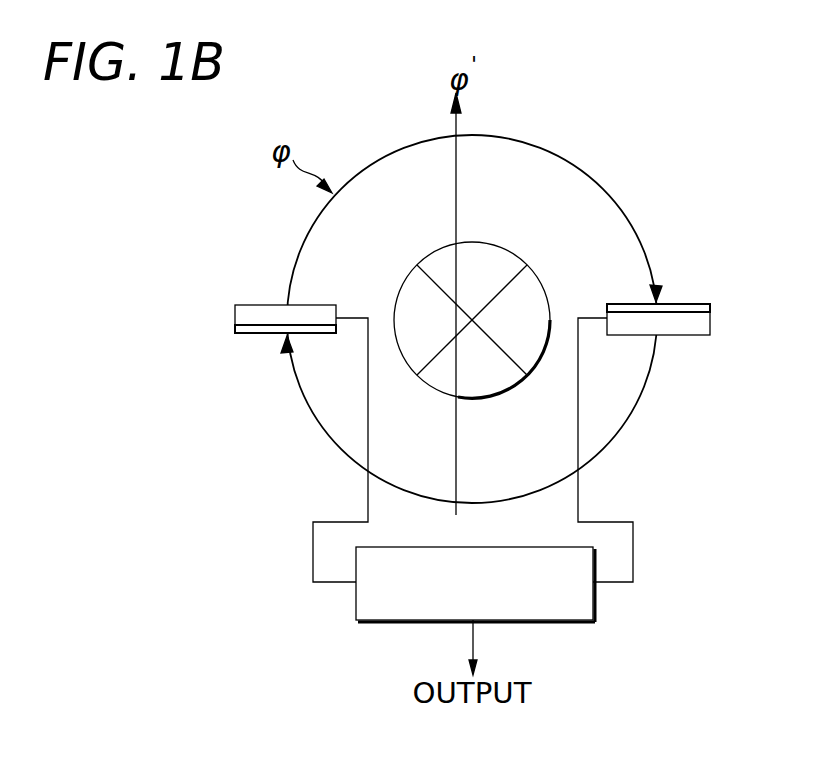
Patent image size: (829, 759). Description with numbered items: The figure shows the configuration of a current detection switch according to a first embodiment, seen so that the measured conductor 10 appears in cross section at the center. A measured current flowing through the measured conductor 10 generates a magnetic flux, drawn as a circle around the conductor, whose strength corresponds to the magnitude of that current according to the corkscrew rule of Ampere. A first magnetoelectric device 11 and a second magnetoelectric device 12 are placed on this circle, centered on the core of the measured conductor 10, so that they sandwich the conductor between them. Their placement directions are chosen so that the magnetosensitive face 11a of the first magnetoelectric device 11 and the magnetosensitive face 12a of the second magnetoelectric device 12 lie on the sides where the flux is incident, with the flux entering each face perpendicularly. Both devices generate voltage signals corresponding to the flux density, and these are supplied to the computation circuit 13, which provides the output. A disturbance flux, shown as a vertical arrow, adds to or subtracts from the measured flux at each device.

The measured conductor 10 is at (497, 372).
The first magnetoelectric device 11 is at (255, 305).
The magnetosensitive face 11a is at (236, 342).
The second magnetoelectric device 12 is at (700, 327).
The magnetosensitive face 12a is at (701, 296).
The computation circuit 13 is at (593, 607).